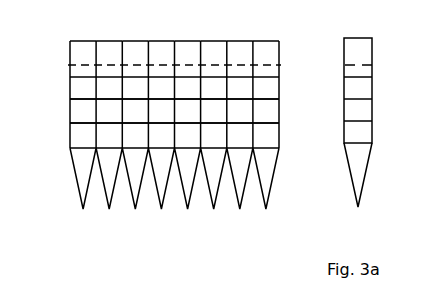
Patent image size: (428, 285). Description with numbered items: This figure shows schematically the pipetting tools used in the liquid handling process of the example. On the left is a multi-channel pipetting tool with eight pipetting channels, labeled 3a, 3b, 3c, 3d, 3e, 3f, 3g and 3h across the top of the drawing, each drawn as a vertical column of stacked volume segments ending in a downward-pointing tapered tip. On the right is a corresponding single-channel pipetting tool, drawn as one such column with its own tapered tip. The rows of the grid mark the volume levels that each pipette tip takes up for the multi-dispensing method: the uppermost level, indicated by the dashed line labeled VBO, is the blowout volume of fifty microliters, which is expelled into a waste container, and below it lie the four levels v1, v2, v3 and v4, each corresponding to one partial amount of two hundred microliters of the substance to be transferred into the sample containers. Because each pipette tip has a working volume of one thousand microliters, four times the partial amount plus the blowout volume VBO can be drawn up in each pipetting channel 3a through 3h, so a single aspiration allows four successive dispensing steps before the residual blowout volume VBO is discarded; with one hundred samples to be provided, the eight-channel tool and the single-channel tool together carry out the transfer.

The blowout volume VBO is at (154, 67).
The voltage level 1 v1 is at (153, 89).
The voltage level 2 v2 is at (153, 111).
The voltage level 3 v3 is at (153, 135).
The voltage level 4 v4 is at (153, 178).
The column 3a is at (83, 83).
The column 3b is at (109, 83).
The column 3c is at (135, 83).
The column 3d is at (161, 83).
The column 3e is at (188, 83).
The column 3f is at (214, 83).
The column 3g is at (240, 83).
The column 3h is at (266, 83).